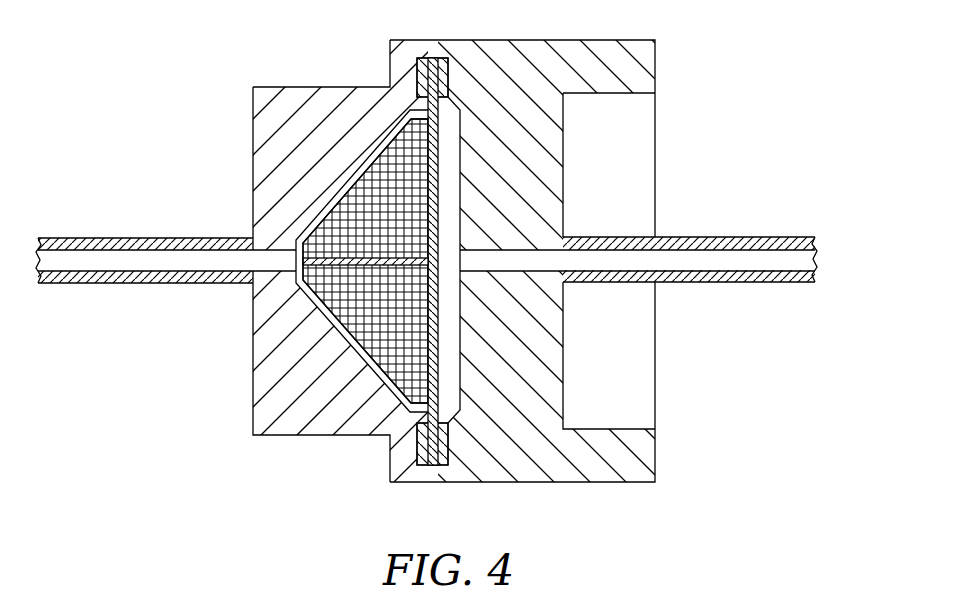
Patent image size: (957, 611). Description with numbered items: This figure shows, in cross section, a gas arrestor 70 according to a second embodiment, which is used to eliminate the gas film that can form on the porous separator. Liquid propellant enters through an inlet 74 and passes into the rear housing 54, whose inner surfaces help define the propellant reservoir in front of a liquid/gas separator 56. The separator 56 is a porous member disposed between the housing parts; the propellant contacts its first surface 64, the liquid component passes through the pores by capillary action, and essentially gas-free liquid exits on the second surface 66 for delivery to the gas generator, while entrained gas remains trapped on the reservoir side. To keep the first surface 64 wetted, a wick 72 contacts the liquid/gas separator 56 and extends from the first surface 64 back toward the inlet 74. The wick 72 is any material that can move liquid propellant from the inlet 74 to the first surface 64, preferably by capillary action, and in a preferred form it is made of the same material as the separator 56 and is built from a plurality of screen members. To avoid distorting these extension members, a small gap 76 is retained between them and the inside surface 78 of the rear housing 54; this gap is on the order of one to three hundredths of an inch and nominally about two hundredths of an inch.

The gas arrestor 70 is at (277, 67).
The rear housing 54 is at (263, 140).
The liquid/gas separator 56 is at (437, 130).
The first surface 64 is at (427, 157).
The second surface 66 is at (437, 167).
The wick 72 is at (375, 352).
The inlet 74 is at (265, 262).
The gap 76 is at (332, 318).
The inside surface 78 is at (333, 207).